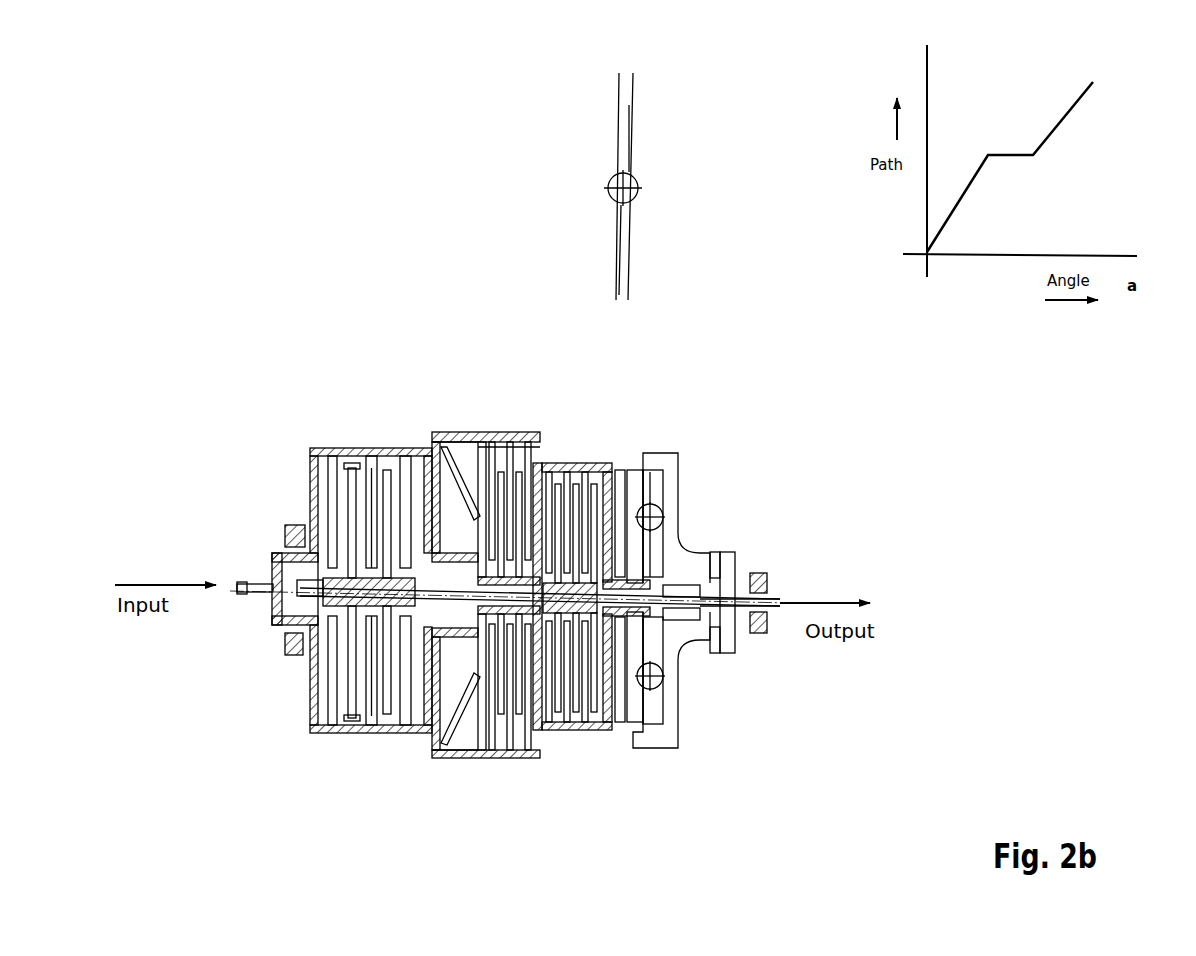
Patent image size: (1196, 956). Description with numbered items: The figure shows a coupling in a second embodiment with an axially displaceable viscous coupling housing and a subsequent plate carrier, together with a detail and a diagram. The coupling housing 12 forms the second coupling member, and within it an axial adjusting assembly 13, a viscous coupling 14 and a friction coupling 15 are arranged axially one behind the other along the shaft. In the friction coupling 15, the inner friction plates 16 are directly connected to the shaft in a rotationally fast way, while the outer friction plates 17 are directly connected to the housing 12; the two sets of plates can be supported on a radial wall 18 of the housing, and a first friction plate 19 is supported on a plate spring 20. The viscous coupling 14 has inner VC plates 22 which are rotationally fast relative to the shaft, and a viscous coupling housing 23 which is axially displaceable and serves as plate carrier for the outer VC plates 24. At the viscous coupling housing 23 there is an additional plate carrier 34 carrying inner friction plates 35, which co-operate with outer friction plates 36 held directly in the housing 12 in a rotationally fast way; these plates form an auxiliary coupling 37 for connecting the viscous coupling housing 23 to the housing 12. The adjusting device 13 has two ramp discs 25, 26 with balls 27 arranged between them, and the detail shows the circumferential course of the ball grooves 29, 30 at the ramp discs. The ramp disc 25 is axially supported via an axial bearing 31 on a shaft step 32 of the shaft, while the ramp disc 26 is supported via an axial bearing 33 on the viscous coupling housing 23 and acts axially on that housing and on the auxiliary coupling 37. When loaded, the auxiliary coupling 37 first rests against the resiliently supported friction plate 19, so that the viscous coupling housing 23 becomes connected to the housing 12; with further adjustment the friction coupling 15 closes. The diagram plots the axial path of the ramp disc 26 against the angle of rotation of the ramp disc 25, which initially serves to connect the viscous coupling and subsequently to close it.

The coupling housing 12 is at (497, 433).
The axial adjusting assembly 13 is at (694, 327).
The viscous coupling 14 is at (528, 778).
The friction coupling 15 is at (366, 762).
The inner friction plates 16 is at (335, 446).
The outer friction plates 17 is at (355, 461).
The radial wall 18 is at (310, 476).
The first friction plate 19 is at (478, 464).
The plate spring 20 is at (433, 434).
The inner VC plates 22 is at (584, 470).
The viscous coupling housing 23 is at (626, 472).
The outer VC plates 24 is at (601, 468).
The ramp disc 25 is at (675, 490).
The ramp disc 26 is at (660, 456).
The balls 27 is at (658, 517).
The ball groove 29 is at (637, 160).
The ball groove 30 is at (611, 234).
The axial bearing 31 is at (717, 555).
The shaft step 32 is at (736, 568).
The axial bearing 33 is at (653, 470).
The additional plate carrier 34 is at (512, 466).
The inner friction plates 35 is at (531, 470).
The outer friction plates 36 is at (503, 466).
The auxiliary coupling 37 is at (492, 316).